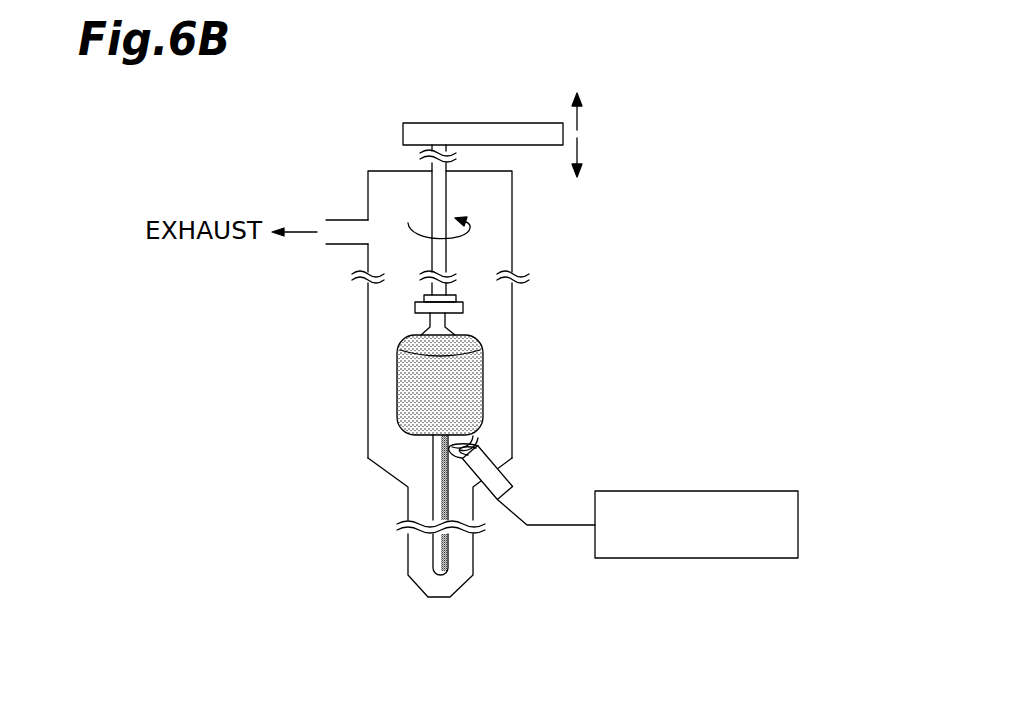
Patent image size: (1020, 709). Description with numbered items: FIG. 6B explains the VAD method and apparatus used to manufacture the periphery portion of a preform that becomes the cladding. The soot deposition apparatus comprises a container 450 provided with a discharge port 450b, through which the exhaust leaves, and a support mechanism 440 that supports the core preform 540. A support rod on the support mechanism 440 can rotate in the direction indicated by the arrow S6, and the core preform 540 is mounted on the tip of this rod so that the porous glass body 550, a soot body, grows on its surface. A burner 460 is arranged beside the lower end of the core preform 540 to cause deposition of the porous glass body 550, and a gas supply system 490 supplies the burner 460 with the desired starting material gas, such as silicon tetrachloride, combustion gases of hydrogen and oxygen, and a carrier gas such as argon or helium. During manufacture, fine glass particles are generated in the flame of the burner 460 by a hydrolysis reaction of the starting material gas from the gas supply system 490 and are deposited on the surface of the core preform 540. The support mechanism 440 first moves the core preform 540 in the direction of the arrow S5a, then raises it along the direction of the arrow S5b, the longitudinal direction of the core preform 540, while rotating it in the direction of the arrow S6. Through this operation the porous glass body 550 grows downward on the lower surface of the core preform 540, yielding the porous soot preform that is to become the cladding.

The support mechanism 440 is at (478, 132).
The container 450 is at (512, 232).
The discharge port 450b is at (343, 219).
The burner 460 is at (505, 476).
The gas supply system 490 is at (752, 491).
The core preform 540 is at (423, 501).
The porous glass body 550 is at (483, 377).
The direction of arrow S5a is at (577, 148).
The direction of arrow S5b is at (577, 117).
The direction of arrow S6 is at (473, 227).